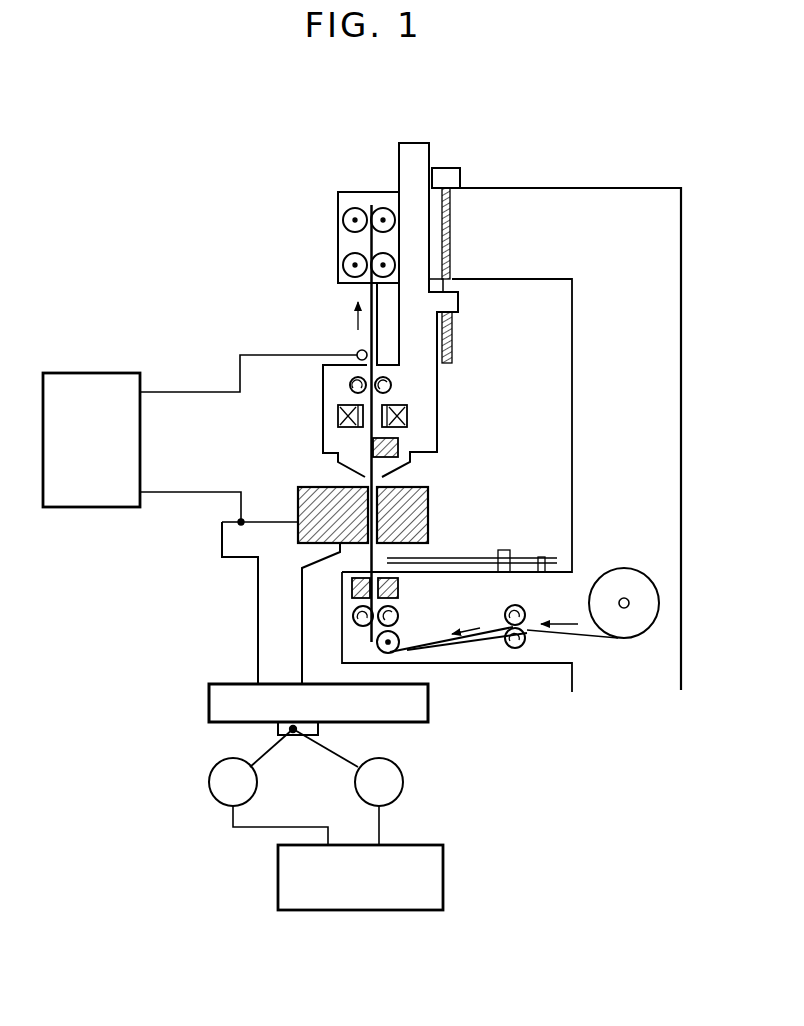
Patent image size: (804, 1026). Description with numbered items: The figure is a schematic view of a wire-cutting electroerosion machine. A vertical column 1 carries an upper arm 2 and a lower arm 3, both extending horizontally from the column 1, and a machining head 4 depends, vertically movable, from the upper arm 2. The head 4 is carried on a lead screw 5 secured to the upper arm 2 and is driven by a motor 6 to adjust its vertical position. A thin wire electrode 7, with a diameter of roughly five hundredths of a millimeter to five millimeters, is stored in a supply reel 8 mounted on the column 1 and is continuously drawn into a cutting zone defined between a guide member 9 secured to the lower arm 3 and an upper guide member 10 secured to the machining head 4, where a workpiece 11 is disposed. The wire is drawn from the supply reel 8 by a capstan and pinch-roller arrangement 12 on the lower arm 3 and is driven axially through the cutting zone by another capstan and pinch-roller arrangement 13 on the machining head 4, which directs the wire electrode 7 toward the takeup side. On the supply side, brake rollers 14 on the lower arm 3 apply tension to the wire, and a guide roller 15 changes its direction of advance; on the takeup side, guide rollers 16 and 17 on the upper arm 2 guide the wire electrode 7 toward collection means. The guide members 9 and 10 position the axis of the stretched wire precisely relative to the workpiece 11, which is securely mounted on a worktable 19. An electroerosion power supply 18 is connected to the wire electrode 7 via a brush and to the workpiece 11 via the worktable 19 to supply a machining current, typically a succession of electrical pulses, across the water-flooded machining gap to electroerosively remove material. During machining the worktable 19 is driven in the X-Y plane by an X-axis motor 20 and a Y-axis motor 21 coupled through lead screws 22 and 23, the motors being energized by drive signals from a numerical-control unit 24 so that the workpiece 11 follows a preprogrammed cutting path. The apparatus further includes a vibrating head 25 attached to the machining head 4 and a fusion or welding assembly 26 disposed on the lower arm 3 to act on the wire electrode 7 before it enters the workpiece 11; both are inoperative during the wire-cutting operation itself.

The vertical column 1 is at (683, 410).
The upper arm 2 is at (555, 190).
The lower arm 3 is at (532, 665).
The machining head 4 is at (438, 385).
The lead screw 5 is at (452, 330).
The motor 6 is at (460, 172).
The wire electrode 7 is at (480, 637).
The supply reel 8 is at (658, 590).
The guide member 9 is at (398, 590).
The upper guide member 10 is at (398, 447).
The workpiece 11 is at (428, 510).
The capstan and pinch-roller arrangement 12 is at (398, 618).
The capstan and pinch-roller arrangement 13 is at (351, 378).
The brake rollers 14 is at (525, 645).
The guide roller 15 is at (402, 647).
The guide roller 16 is at (343, 263).
The guide roller 17 is at (343, 218).
The electroerosion power supply 18 is at (92, 510).
The worktable 19 is at (255, 660).
The X-axis motor 20 is at (209, 790).
The Y-axis motor 21 is at (403, 790).
The lead screw 22 is at (265, 755).
The lead screw 23 is at (338, 752).
The numerical-control unit 24 is at (362, 912).
The vibrating head 25 is at (338, 412).
The fusion or welding assembly 26 is at (462, 553).